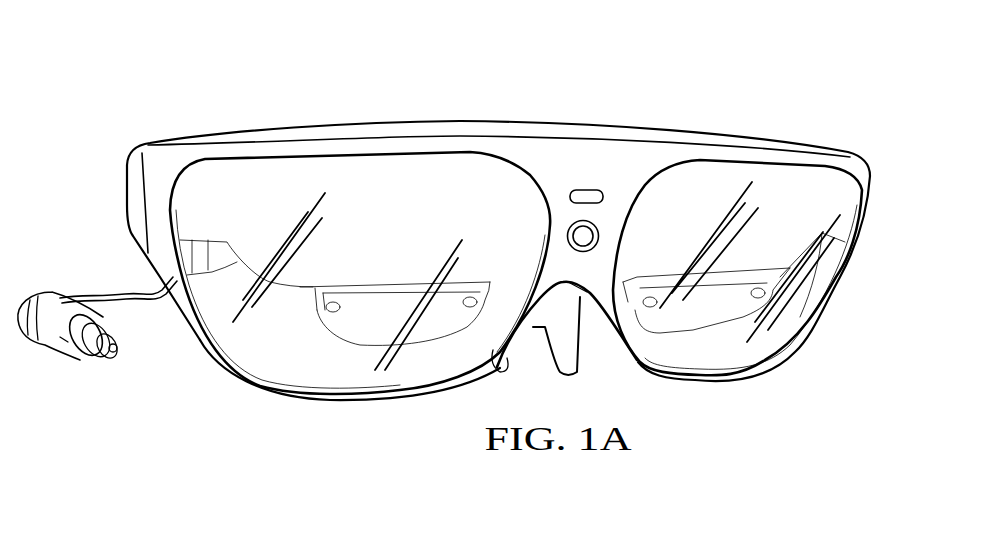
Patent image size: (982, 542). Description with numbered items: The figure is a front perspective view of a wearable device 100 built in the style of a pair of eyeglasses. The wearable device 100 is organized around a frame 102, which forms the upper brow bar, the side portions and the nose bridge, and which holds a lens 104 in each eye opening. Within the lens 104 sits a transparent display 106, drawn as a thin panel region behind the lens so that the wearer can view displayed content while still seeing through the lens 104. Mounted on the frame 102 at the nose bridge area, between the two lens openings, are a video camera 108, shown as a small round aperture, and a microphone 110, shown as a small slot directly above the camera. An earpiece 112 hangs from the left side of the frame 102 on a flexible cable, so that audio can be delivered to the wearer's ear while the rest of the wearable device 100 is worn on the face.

The wearable device 100 is at (444, 226).
The frame 102 is at (217, 153).
The lens 104 is at (777, 332).
The transparent display 106 is at (700, 320).
The video camera 108 is at (575, 237).
The microphone 110 is at (587, 198).
The earpiece 112 is at (80, 361).